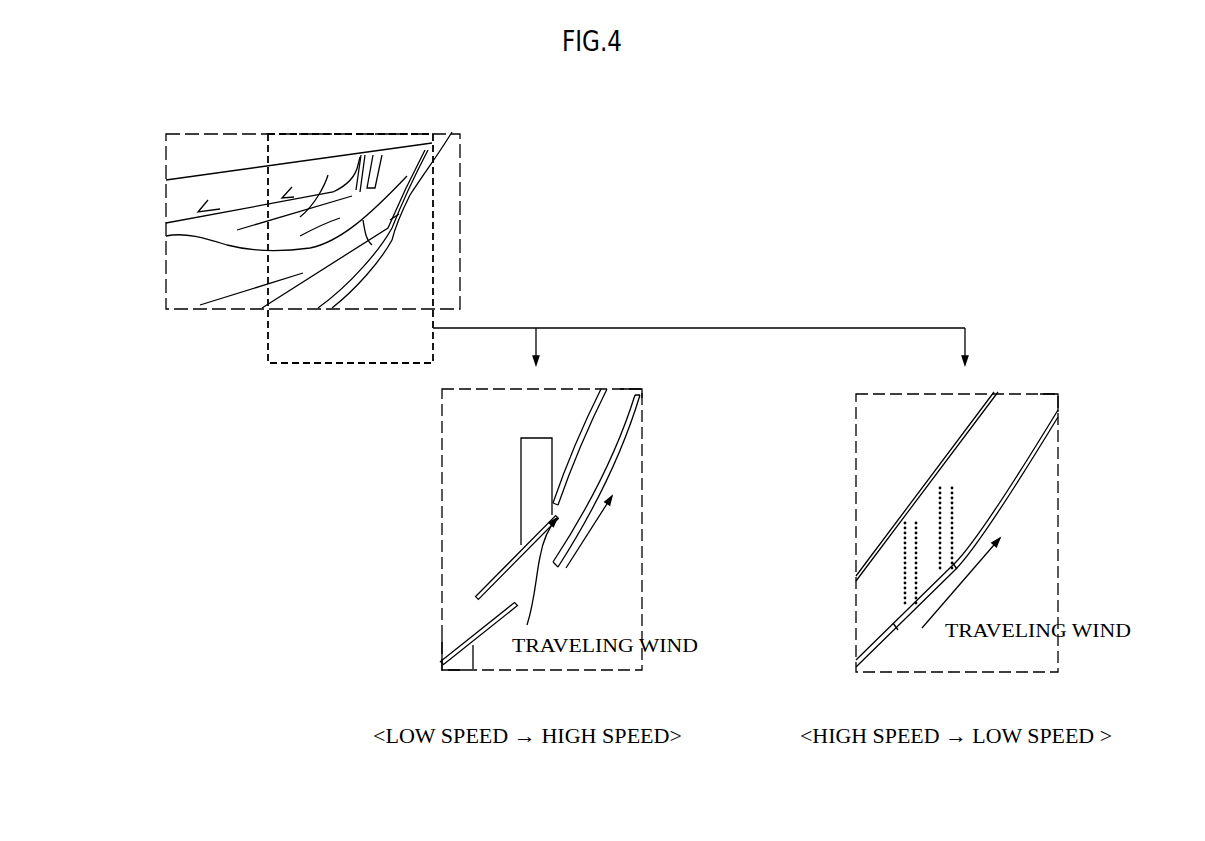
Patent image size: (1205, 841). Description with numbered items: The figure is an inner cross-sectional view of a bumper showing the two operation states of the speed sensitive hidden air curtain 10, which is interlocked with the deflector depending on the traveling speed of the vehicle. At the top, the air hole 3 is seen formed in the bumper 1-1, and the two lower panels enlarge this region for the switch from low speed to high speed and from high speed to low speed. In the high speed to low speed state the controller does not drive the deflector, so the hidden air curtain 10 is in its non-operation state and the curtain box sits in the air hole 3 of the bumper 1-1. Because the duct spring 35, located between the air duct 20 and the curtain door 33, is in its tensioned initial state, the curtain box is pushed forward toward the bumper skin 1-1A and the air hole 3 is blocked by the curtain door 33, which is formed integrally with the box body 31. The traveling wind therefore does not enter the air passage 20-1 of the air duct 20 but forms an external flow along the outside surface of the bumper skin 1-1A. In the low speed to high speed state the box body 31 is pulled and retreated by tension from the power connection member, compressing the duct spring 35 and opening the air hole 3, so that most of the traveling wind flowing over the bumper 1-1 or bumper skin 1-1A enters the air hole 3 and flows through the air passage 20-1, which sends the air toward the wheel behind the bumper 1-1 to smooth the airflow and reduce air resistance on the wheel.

The bumper 1-1 is at (200, 162).
The bumper skin 1-1A is at (473, 669).
The air hole 3 is at (353, 190).
The hidden air curtain 10 is at (218, 242).
The air duct 20 is at (598, 412).
The air passage 20-1 is at (595, 455).
The box body 31 is at (521, 475).
The curtain door 33 is at (540, 533).
The duct spring 35 is at (938, 512).